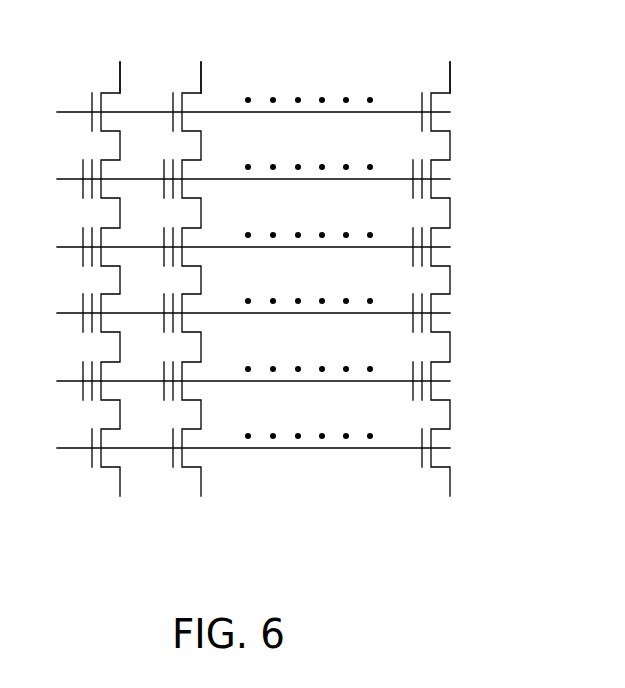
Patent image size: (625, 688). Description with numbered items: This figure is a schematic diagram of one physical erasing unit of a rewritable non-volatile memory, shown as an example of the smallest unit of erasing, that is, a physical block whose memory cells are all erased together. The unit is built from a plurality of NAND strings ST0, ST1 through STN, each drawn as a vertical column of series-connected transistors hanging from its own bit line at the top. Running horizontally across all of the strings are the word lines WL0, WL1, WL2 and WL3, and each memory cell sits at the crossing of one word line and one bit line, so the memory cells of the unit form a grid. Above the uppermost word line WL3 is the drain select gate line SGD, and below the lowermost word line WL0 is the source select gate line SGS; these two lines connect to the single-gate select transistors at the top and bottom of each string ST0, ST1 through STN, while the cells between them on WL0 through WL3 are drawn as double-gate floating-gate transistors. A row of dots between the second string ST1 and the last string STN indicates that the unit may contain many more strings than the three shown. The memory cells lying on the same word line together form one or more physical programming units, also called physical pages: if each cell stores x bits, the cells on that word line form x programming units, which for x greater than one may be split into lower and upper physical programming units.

The NAND string ST0 is at (100, 488).
The NAND string ST1 is at (181, 488).
The NAND string STN is at (432, 488).
The drain select gate line SGD is at (233, 112).
The word line WL3 is at (233, 179).
The word line WL2 is at (233, 247).
The word line WL1 is at (233, 313).
The word line WL0 is at (233, 381).
The source select gate line SGS is at (233, 448).